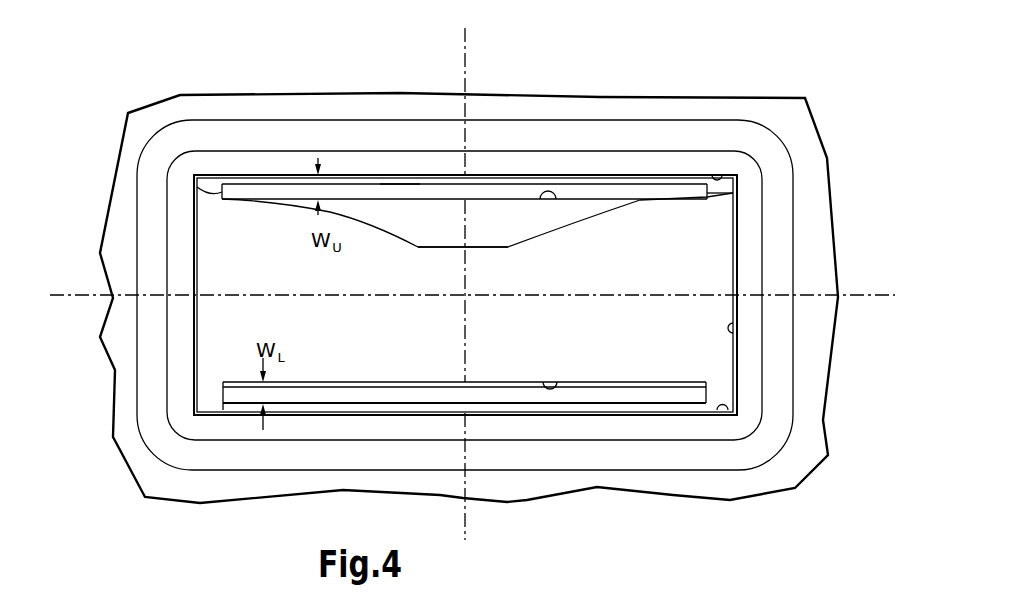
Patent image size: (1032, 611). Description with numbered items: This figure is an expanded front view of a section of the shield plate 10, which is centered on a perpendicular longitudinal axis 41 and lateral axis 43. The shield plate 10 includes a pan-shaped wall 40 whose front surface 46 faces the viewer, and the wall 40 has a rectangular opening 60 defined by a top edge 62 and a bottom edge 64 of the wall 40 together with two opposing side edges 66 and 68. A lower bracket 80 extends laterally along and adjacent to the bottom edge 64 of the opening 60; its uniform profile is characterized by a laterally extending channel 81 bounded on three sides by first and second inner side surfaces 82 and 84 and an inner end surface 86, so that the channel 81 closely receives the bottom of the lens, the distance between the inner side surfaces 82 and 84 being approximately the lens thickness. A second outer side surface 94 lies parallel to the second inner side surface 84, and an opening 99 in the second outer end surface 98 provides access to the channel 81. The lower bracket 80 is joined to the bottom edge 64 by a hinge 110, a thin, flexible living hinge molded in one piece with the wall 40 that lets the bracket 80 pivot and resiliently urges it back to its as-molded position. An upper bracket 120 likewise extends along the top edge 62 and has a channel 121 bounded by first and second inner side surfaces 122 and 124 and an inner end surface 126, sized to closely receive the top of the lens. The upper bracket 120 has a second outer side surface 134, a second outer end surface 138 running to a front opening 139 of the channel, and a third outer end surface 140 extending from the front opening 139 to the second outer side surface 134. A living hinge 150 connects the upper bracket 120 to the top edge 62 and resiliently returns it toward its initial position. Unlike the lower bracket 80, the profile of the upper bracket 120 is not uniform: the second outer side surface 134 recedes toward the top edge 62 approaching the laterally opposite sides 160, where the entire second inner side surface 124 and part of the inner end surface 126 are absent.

The shield plate 10 is at (777, 69).
The wall 40 is at (808, 204).
The longitudinal axis 41 is at (467, 62).
The lateral axis 43 is at (862, 293).
The front surface 46 is at (808, 228).
The rectangular opening 60 is at (481, 282).
The top edge 62 is at (713, 176).
The bottom edge 64 is at (717, 412).
The side edge 66 is at (737, 330).
The side edge 68 is at (198, 253).
The lower bracket 80 is at (652, 381).
The channel 81 is at (611, 382).
The first inner side surface 82 is at (570, 402).
The second inner side surface 84 is at (544, 389).
The inner end surface 86 is at (497, 398).
The second outer side surface 94 is at (425, 381).
The second outer end surface 98 is at (367, 381).
The opening 99 is at (332, 381).
The hinge 110 is at (298, 415).
The upper bracket 120 is at (607, 204).
The channel 121 is at (602, 208).
The first inner side surface 122 is at (596, 212).
The second inner side surface 124 is at (555, 200).
The inner end surface 126 is at (510, 193).
The second outer side surface 134 is at (448, 249).
The second outer end surface 138 is at (398, 183).
The front opening 139 is at (381, 206).
The third outer end surface 140 is at (440, 218).
The hinge 150 is at (260, 176).
The laterally opposite sides 160 is at (197, 187).